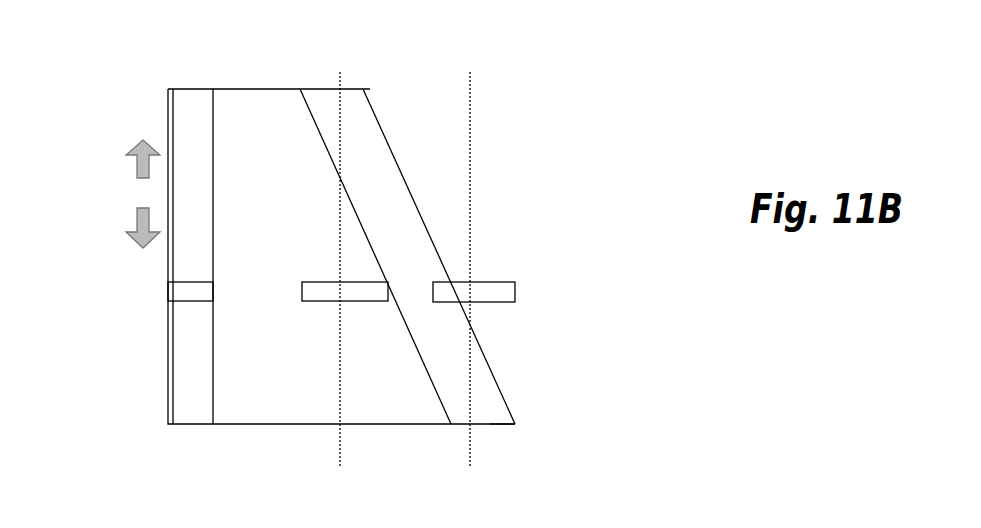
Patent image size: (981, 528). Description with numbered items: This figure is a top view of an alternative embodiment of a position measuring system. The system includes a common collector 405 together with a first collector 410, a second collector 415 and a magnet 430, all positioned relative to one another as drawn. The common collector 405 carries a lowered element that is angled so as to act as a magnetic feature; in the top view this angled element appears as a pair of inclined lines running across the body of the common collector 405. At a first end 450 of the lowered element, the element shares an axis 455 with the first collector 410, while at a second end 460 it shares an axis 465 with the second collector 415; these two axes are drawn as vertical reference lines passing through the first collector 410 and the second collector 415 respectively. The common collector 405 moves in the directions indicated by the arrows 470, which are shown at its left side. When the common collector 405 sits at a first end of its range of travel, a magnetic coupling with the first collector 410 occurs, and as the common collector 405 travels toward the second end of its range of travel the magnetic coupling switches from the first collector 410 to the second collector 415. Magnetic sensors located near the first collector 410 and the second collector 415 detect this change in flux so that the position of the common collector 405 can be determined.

The common collector 405 is at (317, 426).
The first collector 410 is at (338, 303).
The second collector 415 is at (503, 302).
The magnet 430 is at (168, 290).
The first end 450 is at (299, 76).
The axis 455 is at (350, 104).
The second end 460 is at (497, 433).
The axis 465 is at (481, 230).
The arrows 470 is at (135, 218).